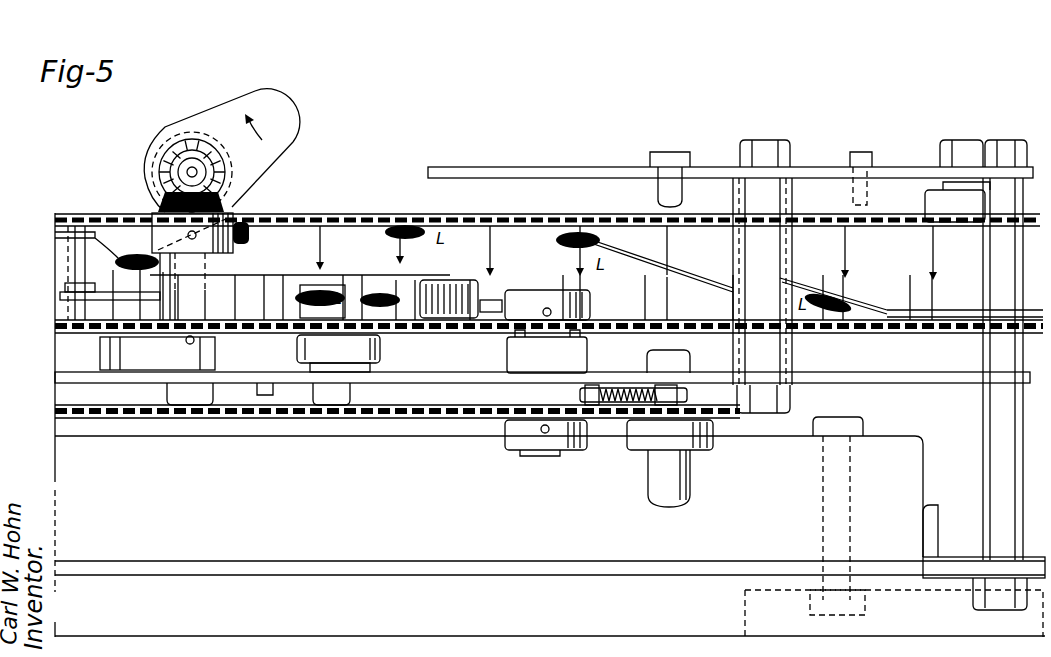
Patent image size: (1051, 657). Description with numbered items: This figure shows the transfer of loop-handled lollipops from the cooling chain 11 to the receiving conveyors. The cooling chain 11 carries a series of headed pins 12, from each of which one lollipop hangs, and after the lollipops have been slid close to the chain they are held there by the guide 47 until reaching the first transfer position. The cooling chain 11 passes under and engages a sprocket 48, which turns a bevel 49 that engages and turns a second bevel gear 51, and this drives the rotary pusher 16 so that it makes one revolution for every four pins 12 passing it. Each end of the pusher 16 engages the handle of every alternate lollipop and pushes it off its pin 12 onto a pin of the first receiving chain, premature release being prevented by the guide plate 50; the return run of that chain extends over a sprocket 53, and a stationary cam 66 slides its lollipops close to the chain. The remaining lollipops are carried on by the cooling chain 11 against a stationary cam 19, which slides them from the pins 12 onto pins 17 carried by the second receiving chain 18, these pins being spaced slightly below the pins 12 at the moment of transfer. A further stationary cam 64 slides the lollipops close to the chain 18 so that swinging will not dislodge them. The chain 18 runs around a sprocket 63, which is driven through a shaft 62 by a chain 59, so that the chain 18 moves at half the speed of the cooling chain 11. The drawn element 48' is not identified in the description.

The cooling chain 11 is at (370, 222).
The headed pins 12 is at (318, 249).
The rotary pusher 16 is at (291, 144).
The pins 17 is at (118, 272).
The second receiving chain 18 is at (792, 336).
The stationary cam 19 is at (700, 276).
The guide 47 is at (65, 232).
The sprocket 48 is at (213, 255).
The housing 48' is at (145, 353).
The bevel 49 is at (165, 197).
The guide plate 50 is at (70, 264).
The second bevel gear 51 is at (170, 148).
The sprocket 53 is at (384, 338).
The chain 59 is at (592, 440).
The shaft 62 is at (524, 455).
The sprocket 63 is at (558, 337).
The stationary cam 64 is at (866, 302).
The stationary cam 66 is at (428, 280).